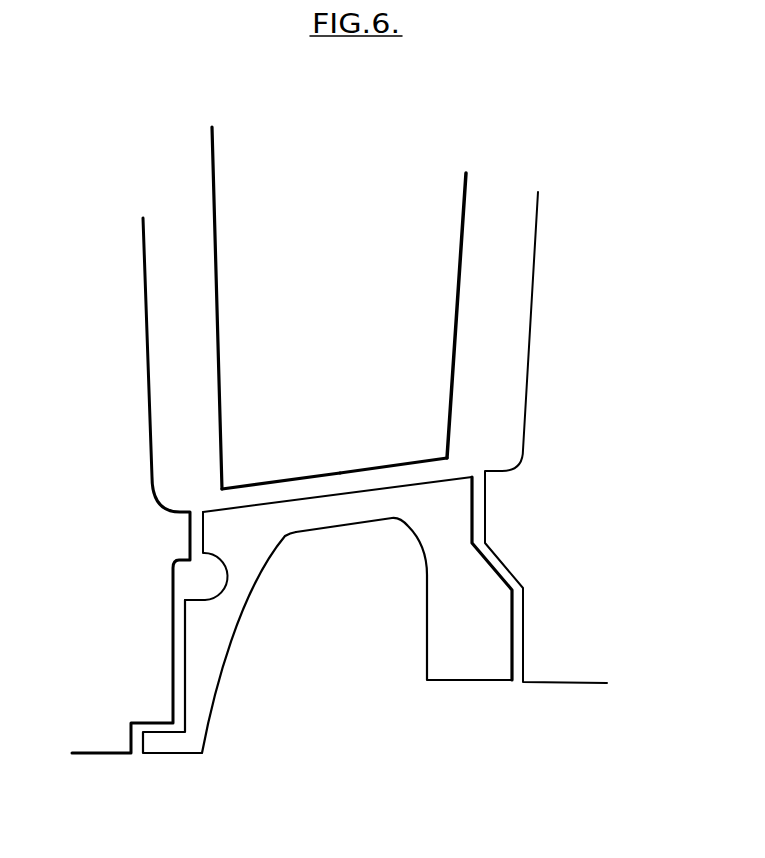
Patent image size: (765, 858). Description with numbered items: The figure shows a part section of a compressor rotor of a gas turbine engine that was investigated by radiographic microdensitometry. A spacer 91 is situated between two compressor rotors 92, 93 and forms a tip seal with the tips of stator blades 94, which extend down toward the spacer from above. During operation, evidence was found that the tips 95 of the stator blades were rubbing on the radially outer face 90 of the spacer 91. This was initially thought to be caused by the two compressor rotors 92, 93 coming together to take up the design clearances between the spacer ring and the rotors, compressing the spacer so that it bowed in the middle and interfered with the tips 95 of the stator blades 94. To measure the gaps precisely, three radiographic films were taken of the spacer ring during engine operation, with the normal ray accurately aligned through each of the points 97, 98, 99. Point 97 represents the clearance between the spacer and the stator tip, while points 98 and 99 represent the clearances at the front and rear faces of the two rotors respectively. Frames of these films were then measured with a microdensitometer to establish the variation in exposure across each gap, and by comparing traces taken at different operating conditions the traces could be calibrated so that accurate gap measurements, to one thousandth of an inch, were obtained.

The radially outer face 90 is at (277, 503).
The spacer 91 is at (352, 526).
The compressor rotor 92 is at (153, 479).
The compressor rotor 93 is at (523, 417).
The stator blades 94 is at (216, 257).
The tips of the stator blades 95 is at (345, 472).
The point representing stator tip clearance 97 is at (367, 480).
The point representing front gap 98 is at (478, 523).
The point representing rear gap 99 is at (198, 540).